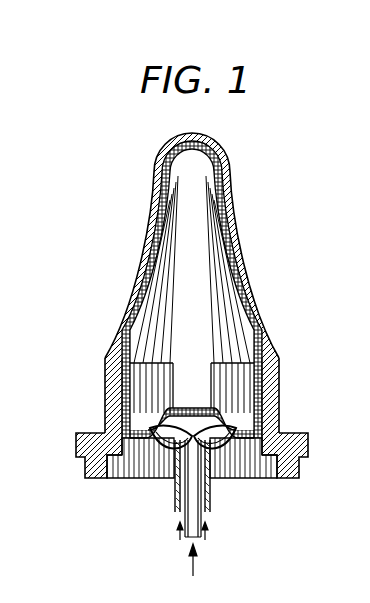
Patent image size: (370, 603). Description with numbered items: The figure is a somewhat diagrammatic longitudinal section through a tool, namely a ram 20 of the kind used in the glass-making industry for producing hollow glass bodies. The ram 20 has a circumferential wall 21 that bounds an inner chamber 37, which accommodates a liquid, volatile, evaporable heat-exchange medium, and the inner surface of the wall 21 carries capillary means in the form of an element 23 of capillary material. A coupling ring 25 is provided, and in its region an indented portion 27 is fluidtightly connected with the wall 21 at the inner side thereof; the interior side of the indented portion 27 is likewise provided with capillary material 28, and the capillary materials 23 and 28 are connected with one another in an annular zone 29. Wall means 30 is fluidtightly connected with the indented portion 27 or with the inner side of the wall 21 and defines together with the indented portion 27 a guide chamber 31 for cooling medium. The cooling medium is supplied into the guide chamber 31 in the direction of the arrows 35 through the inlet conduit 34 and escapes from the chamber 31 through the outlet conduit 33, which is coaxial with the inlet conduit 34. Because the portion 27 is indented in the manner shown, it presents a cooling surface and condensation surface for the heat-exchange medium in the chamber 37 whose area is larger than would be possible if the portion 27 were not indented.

The ram 20 is at (185, 305).
The circumferential wall 21 is at (156, 198).
The element of capillary material 23 is at (246, 282).
The coupling ring 25 is at (78, 446).
The indented portion 27 is at (284, 459).
The capillary material 28 is at (192, 410).
The annular zone 29 is at (185, 308).
The wall means 30 is at (146, 443).
The guide chamber 31 is at (138, 410).
The outlet conduit 33 is at (174, 506).
The inlet conduit 34 is at (202, 520).
The arrows 35 is at (232, 445).
The chamber 37 is at (137, 290).